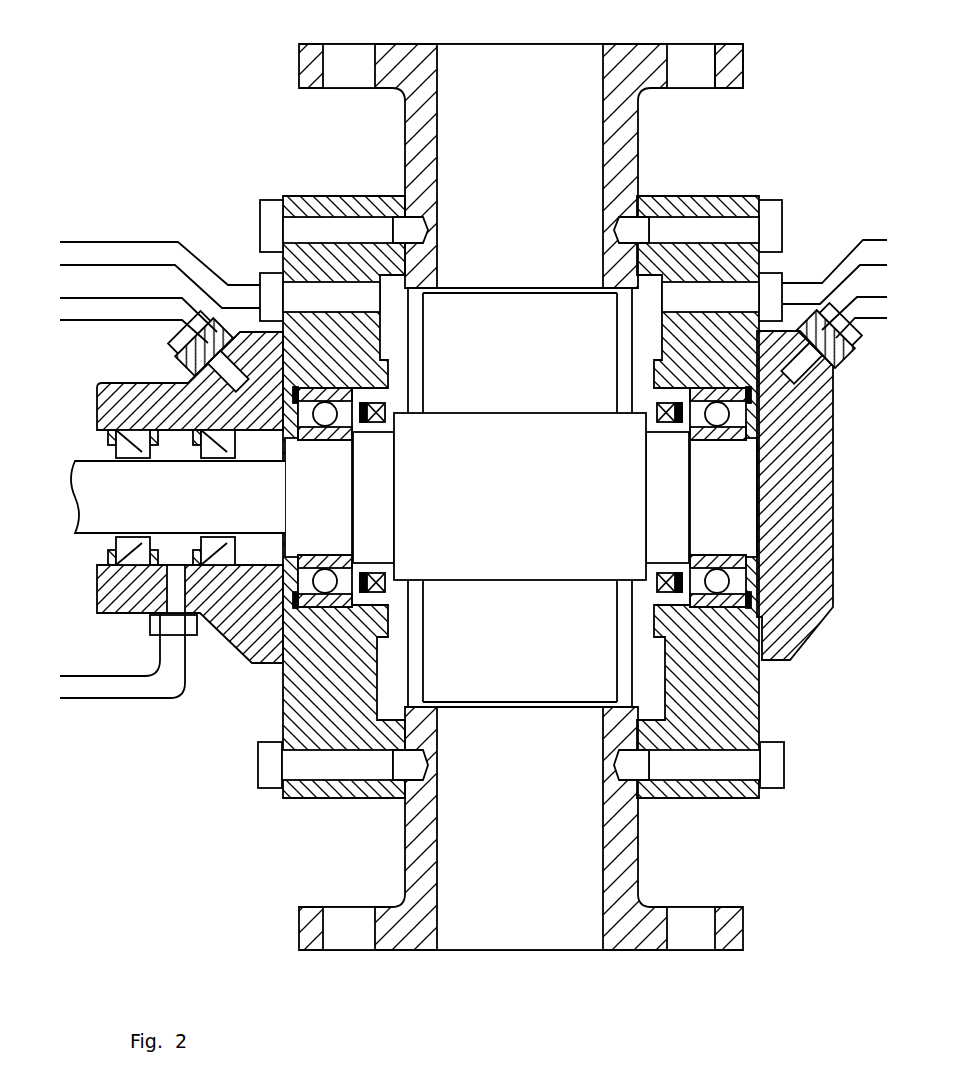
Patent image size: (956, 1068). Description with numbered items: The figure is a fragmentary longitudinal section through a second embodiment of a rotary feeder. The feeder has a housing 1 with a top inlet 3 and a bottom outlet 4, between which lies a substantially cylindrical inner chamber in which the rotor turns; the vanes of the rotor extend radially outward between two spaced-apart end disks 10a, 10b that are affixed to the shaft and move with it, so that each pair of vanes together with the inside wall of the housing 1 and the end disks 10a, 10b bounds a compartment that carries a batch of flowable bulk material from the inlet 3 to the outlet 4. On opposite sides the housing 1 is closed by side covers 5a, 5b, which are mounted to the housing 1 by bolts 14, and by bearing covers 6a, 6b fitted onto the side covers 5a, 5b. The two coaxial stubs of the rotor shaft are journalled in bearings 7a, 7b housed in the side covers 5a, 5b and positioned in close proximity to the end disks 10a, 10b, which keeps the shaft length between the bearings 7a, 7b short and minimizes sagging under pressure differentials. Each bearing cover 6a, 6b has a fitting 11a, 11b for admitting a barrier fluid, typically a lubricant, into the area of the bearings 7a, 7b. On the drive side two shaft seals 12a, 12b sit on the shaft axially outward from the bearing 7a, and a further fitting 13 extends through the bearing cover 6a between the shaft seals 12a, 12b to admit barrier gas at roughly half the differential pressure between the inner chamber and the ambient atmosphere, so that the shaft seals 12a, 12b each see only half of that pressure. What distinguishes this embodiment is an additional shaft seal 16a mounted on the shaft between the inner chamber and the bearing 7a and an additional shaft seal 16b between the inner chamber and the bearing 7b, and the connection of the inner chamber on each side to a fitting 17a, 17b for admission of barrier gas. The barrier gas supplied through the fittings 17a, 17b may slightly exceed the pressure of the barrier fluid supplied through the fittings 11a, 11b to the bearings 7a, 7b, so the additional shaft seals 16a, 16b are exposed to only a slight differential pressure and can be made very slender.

The housing 1 is at (728, 70).
The top inlet 3 is at (529, 130).
The bottom outlet 4 is at (524, 883).
The side cover 5a is at (313, 790).
The side cover 5b is at (730, 516).
The bearing cover 6a is at (113, 398).
The bearing cover 6b is at (812, 594).
The bearing 7a is at (314, 607).
The bearing 7b is at (752, 622).
The end disk 10a is at (423, 669).
The end disk 10b is at (619, 669).
The fitting 11a is at (218, 344).
The fitting 11b is at (818, 338).
The shaft seal 12a is at (130, 454).
The shaft seal 12b is at (212, 454).
The fitting 13 is at (172, 627).
The bolt 14 is at (774, 212).
The additional shaft seal 16a is at (376, 428).
The additional shaft seal 16b is at (665, 428).
The fitting 17a is at (260, 293).
The fitting 17b is at (777, 282).